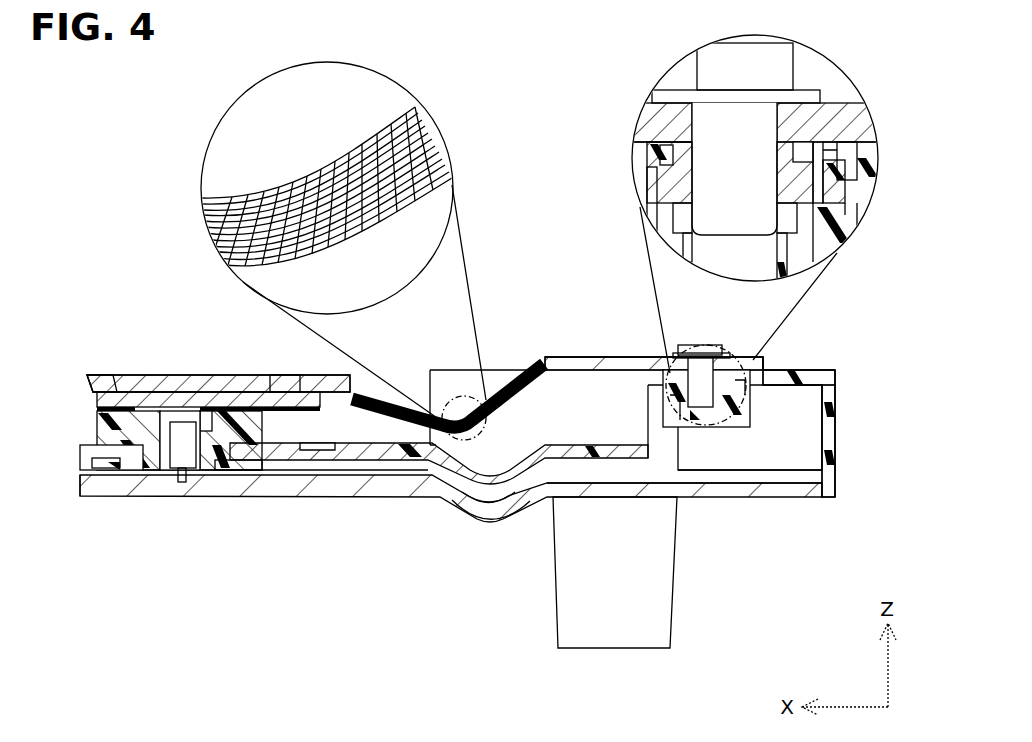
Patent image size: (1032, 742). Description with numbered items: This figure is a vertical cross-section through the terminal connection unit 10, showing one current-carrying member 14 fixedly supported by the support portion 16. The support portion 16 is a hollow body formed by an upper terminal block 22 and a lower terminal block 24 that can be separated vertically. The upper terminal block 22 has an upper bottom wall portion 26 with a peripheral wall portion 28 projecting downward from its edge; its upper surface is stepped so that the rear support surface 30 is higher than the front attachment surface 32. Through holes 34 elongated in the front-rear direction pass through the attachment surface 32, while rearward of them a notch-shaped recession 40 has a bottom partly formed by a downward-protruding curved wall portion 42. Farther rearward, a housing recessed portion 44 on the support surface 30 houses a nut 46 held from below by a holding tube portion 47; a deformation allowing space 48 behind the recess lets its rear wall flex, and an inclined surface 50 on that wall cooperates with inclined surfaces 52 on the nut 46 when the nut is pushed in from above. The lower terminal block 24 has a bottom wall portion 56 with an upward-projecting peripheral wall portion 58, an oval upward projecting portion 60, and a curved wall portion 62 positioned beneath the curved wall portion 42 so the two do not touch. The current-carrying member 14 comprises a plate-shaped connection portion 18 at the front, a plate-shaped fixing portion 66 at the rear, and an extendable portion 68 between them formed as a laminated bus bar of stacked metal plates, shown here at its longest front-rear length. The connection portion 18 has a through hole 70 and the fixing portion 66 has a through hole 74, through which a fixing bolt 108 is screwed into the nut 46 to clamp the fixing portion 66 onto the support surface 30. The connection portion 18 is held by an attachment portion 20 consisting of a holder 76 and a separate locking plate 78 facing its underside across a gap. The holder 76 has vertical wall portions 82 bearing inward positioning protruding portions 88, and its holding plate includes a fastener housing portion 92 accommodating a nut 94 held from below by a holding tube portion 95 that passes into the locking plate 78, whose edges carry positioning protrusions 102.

The terminal connection unit 10 is at (845, 328).
The current-carrying member 14 is at (553, 330).
The support portion 16 is at (890, 497).
The connection portion 18 is at (257, 400).
The attachment portion 20 is at (103, 356).
The upper terminal block 22 is at (850, 462).
The lower terminal block 24 is at (815, 508).
The upper bottom wall portion 26 is at (780, 370).
The peripheral wall portion 28 is at (837, 418).
The support surface 30 is at (827, 358).
The attachment surface 32 is at (110, 446).
The through hole 34 is at (320, 458).
The recession 40 is at (625, 424).
The curved wall portion 42 is at (483, 492).
The housing recessed portion 44 is at (813, 240).
The nut 46 is at (660, 180).
The holding tube portion 47 is at (781, 248).
The deformation allowing space 48 is at (852, 162).
The inclined surface 50 is at (808, 143).
The inclined surface 52 is at (815, 198).
The bottom wall portion 56 is at (722, 496).
The peripheral wall portion 58 is at (86, 479).
The upward projecting portion 60 is at (134, 474).
The curved wall portion 62 is at (497, 512).
The fixing portion 66 is at (597, 364).
The extendable portion 68 is at (503, 365).
The through hole 70 is at (180, 397).
The through hole 74 is at (770, 123).
The holder 76 is at (134, 368).
The locking plate 78 is at (230, 474).
The vertical wall portion 82 is at (113, 392).
The positioning protruding portion 88 is at (288, 383).
The fastener housing portion 92 is at (195, 457).
The nut 94 is at (222, 417).
The holding tube portion 95 is at (182, 481).
The positioning protrusion 102 is at (114, 466).
The fixing bolt 108 is at (697, 74).